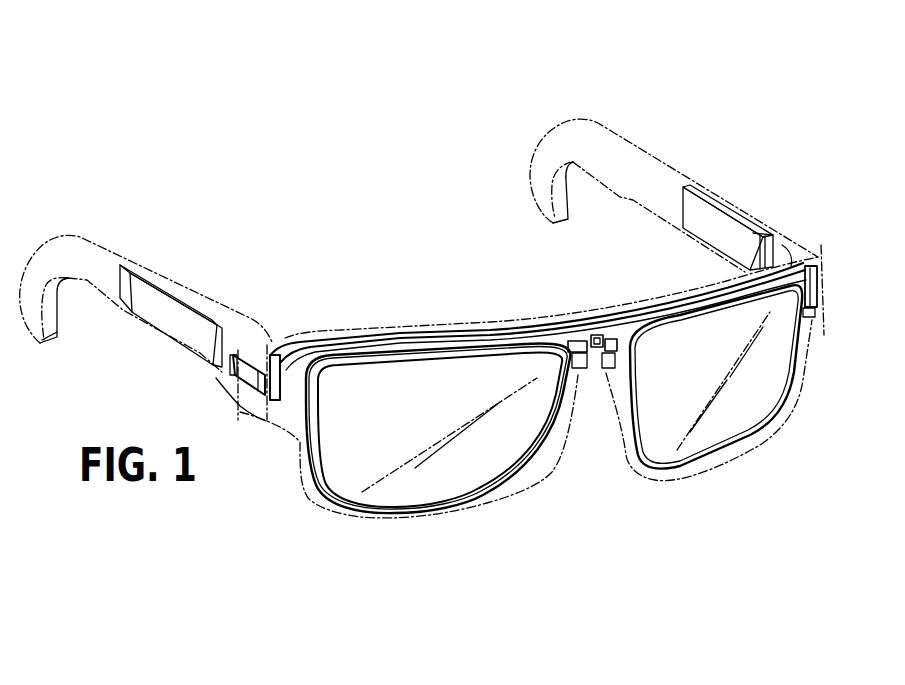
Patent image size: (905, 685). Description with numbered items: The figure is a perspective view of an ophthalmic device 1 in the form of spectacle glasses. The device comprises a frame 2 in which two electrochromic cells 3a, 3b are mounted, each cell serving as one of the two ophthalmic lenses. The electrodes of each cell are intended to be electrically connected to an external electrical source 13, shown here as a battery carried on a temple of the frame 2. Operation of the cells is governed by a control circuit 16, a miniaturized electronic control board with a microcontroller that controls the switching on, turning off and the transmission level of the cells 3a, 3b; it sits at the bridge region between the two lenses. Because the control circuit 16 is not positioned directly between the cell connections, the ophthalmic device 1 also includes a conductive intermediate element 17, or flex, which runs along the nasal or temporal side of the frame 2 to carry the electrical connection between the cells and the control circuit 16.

The ophthalmic device 1 is at (708, 94).
The frame 2 is at (586, 178).
The EC cell 3a is at (505, 445).
The EC cell 3b is at (740, 390).
The external electrical source 13 is at (730, 235).
The control circuit 16 is at (604, 338).
The conductive intermediate element 17 is at (456, 345).